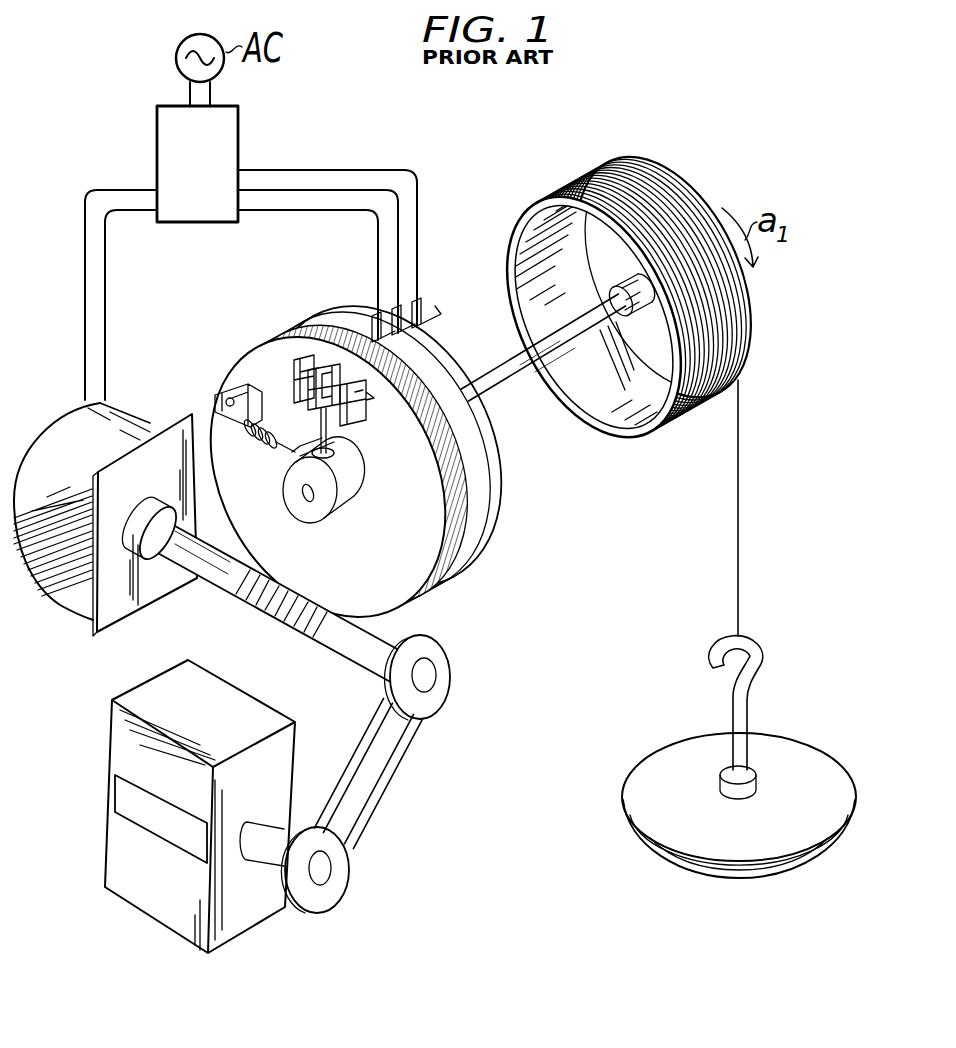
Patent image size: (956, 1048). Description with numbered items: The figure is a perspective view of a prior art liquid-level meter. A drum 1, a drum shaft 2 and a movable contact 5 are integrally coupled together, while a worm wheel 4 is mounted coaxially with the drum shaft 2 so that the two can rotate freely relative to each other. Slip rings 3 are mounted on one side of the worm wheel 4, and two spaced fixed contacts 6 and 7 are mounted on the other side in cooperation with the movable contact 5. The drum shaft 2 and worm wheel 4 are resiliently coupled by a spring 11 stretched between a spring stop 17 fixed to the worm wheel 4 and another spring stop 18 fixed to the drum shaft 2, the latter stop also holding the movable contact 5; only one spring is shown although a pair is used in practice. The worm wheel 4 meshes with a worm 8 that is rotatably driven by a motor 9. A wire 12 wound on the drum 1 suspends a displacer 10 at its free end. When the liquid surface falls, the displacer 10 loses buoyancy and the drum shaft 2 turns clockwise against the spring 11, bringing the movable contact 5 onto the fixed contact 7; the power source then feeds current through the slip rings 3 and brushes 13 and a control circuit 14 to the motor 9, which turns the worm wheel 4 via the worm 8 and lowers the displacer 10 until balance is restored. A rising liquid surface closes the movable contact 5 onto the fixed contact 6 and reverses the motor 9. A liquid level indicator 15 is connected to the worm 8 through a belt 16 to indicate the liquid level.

The drum 1 is at (613, 432).
The drum shaft 2 is at (510, 388).
The slip rings 3 is at (479, 496).
The worm wheel 4 is at (418, 578).
The movable contact 5 is at (324, 369).
The fixed contact 6 is at (296, 358).
The fixed contact 7 is at (354, 382).
The worm 8 is at (289, 636).
The motor 9 is at (72, 420).
The displacer 10 is at (663, 753).
The spring 11 is at (256, 447).
The wire 12 is at (738, 537).
The brushes 13 is at (422, 331).
The control circuit 14 is at (240, 136).
The liquid level indicator 15 is at (155, 902).
The belt 16 is at (378, 774).
The spring stop 17 is at (215, 393).
The spring stop 18 is at (320, 518).